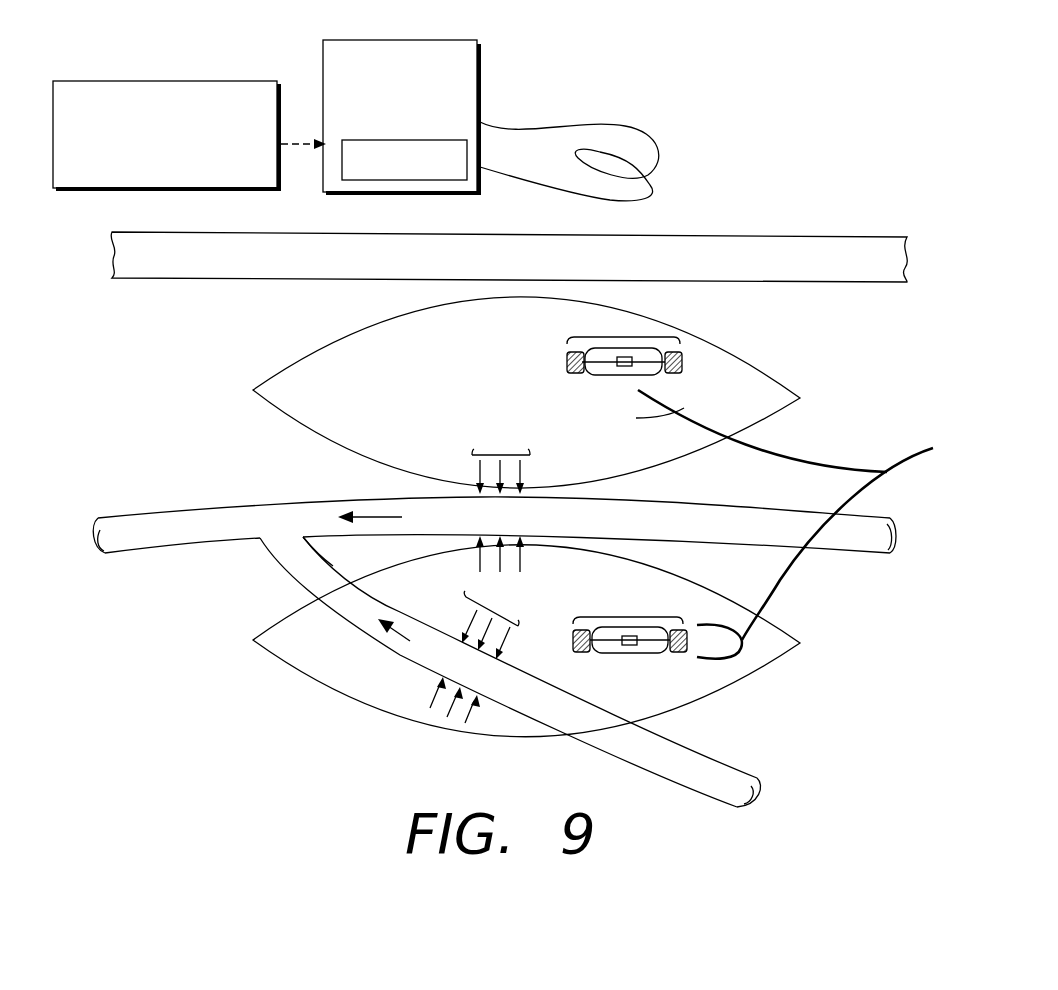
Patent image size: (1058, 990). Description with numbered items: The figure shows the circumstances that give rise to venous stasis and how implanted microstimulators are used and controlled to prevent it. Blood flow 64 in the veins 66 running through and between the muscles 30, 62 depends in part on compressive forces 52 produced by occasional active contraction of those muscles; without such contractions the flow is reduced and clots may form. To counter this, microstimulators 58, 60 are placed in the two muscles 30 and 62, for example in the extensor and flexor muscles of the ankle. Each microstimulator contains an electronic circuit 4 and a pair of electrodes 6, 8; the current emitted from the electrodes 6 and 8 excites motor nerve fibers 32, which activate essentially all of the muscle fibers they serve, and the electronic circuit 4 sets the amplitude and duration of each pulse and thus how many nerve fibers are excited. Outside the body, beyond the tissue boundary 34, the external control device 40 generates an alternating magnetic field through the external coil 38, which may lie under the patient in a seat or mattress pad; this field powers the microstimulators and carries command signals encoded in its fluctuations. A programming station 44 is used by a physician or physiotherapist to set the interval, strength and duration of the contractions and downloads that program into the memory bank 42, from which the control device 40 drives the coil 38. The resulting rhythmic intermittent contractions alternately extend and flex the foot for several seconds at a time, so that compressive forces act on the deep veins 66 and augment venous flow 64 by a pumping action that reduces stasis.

The electronic circuit 4 is at (623, 375).
The electrode 6 is at (567, 362).
The electrode 8 is at (682, 362).
The muscle 30 is at (461, 381).
The motor nerve fibers 32 is at (858, 472).
The skin 34 is at (528, 270).
The external coil 38 is at (623, 127).
The external control device 40 is at (443, 40).
The memory bank 42 is at (380, 180).
The programming station 44 is at (205, 80).
The compressive forces 52 is at (503, 452).
The first implantable stimulator 58 is at (628, 338).
The second implantable stimulator 60 is at (633, 616).
The muscle 62 is at (328, 655).
The blood flow 64 is at (374, 497).
The veins 66 is at (334, 565).